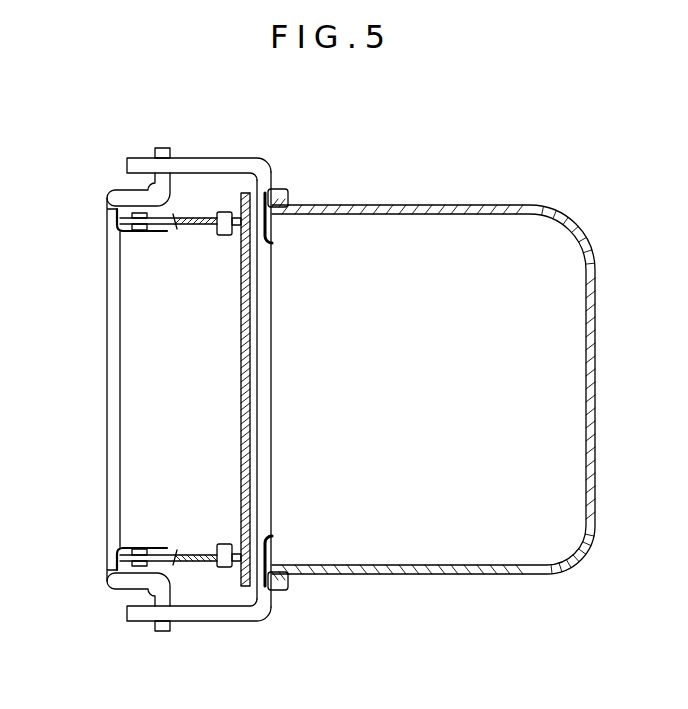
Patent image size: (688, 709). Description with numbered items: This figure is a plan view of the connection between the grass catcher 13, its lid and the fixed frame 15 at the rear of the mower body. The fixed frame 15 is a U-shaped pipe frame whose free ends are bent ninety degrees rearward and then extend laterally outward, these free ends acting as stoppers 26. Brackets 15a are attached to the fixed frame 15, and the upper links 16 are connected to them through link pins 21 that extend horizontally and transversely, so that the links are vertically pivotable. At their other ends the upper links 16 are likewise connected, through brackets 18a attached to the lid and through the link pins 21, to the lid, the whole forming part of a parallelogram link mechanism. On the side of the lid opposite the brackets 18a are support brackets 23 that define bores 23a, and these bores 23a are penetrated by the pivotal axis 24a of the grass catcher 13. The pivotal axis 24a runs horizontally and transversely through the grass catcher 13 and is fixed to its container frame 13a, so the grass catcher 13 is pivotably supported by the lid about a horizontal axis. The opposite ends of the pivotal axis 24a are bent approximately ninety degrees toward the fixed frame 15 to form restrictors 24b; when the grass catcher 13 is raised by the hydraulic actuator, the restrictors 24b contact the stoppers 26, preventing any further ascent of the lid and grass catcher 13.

The grass catcher 13 is at (590, 232).
The container frame 13a is at (488, 205).
The fixed frame 15 is at (112, 190).
The brackets 15a is at (112, 228).
The upper links 16 is at (190, 224).
The brackets 18a is at (213, 227).
The link pins 21 is at (224, 237).
The support brackets 23 is at (290, 189).
The bores 23a is at (265, 232).
The pivotal axis 24a is at (273, 400).
The restrictors 24b is at (225, 156).
The stoppers 26 is at (162, 149).